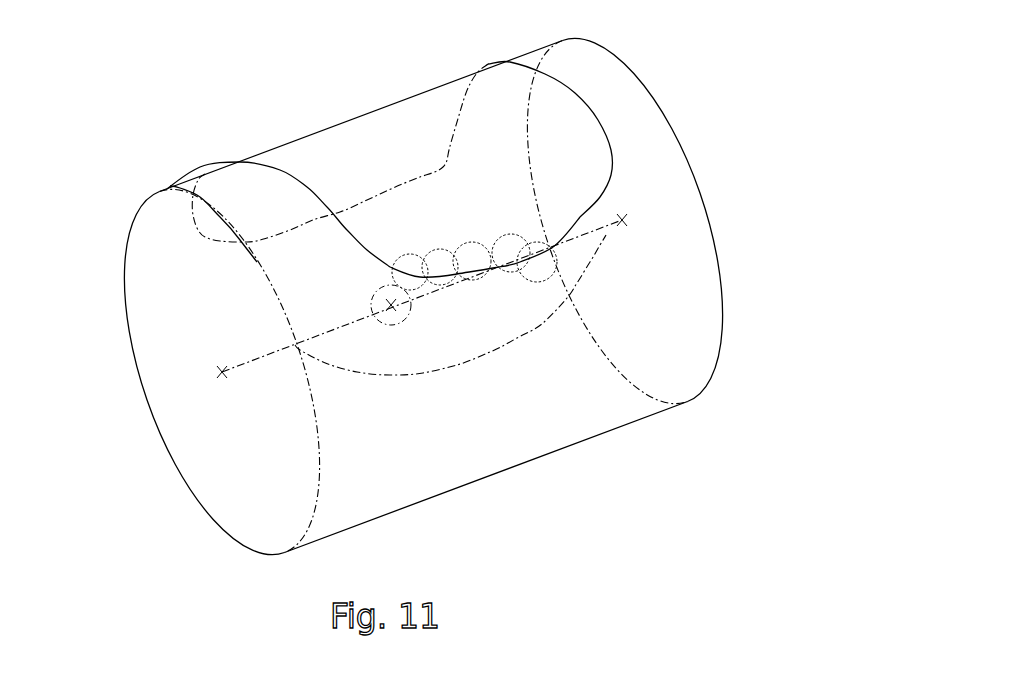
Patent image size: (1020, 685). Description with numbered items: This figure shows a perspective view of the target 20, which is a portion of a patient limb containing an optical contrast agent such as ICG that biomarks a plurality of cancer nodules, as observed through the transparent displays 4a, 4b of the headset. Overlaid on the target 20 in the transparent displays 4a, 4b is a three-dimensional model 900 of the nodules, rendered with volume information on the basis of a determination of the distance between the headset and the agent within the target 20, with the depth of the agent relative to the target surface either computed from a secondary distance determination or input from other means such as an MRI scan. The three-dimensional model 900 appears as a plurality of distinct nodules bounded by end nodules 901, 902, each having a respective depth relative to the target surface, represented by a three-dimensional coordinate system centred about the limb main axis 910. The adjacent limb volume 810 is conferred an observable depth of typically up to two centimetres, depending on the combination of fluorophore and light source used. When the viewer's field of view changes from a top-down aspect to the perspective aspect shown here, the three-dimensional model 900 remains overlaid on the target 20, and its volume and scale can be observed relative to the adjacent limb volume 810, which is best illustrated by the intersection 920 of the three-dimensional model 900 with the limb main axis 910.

The transparent display 4a is at (405, 291).
The transparent display 4b is at (201, 61).
The target 20 is at (590, 113).
The 3D model 900 is at (552, 254).
The end nodule 901 is at (552, 270).
The end nodule 902 is at (383, 299).
The limb main axis 910 is at (243, 366).
The intersection 920 is at (458, 283).
The adjacent limb volume 810 is at (517, 340).